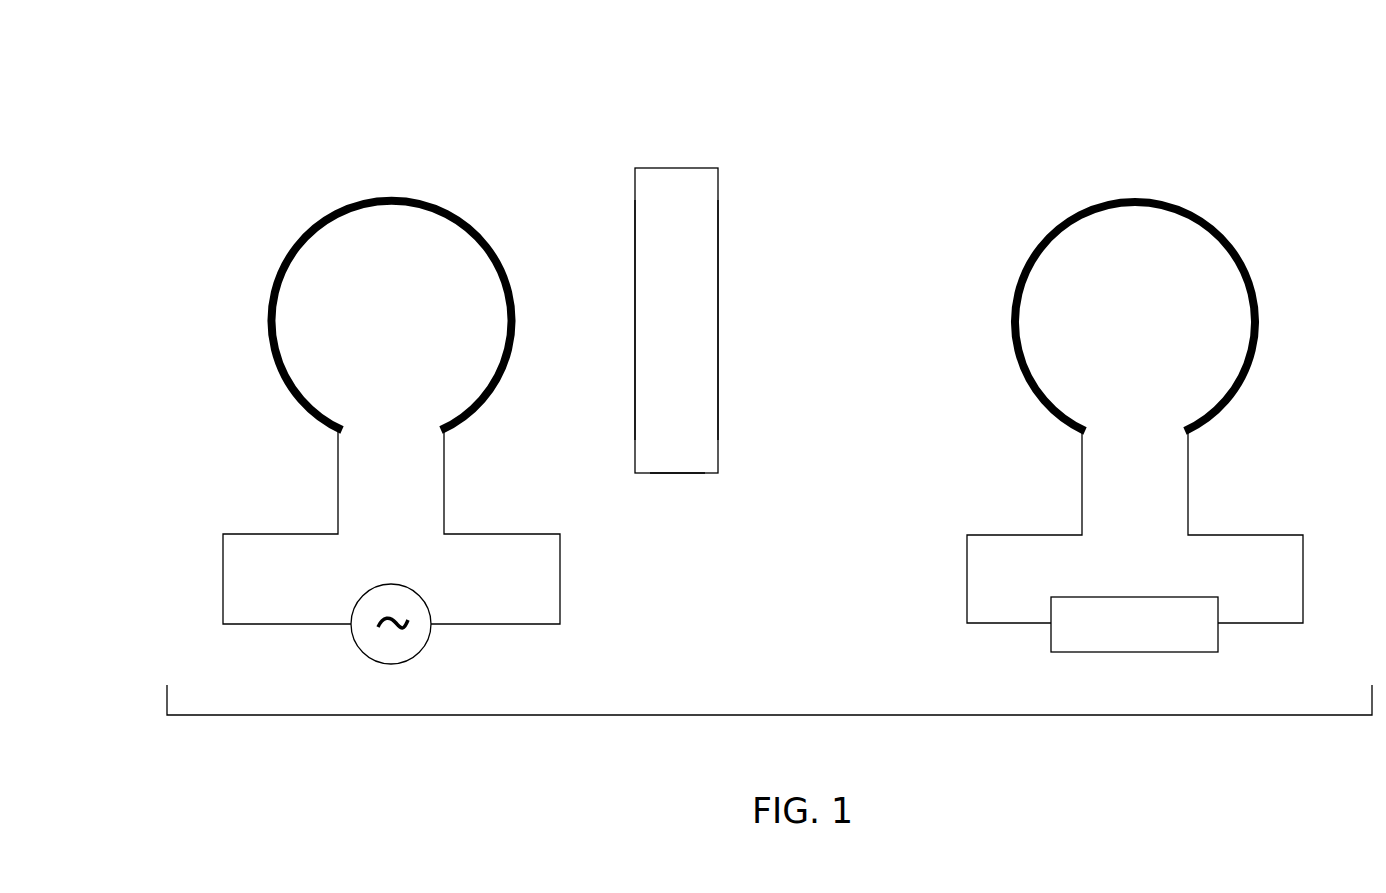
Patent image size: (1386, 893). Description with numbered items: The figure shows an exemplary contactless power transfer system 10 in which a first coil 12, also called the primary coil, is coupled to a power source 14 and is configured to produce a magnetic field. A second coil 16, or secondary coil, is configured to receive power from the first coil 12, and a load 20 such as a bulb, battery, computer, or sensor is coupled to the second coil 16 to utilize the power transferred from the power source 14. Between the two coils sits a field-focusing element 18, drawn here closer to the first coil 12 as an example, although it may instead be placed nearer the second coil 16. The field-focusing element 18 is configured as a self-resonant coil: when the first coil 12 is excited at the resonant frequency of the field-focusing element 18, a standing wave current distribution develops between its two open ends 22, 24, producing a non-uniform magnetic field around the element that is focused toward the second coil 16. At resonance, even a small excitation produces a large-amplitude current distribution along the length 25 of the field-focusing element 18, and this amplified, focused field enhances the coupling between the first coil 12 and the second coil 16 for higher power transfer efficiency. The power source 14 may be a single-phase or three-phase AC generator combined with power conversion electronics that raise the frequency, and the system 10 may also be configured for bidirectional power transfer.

The contactless power transfer system 10 is at (298, 65).
The first coil 12 is at (472, 223).
The power source 14 is at (352, 602).
The second coil 16 is at (1240, 249).
The field-focusing element 18 is at (677, 168).
The load 20 is at (1050, 606).
The open end 22 is at (634, 385).
The open end 24 is at (720, 345).
The length 25 is at (695, 473).